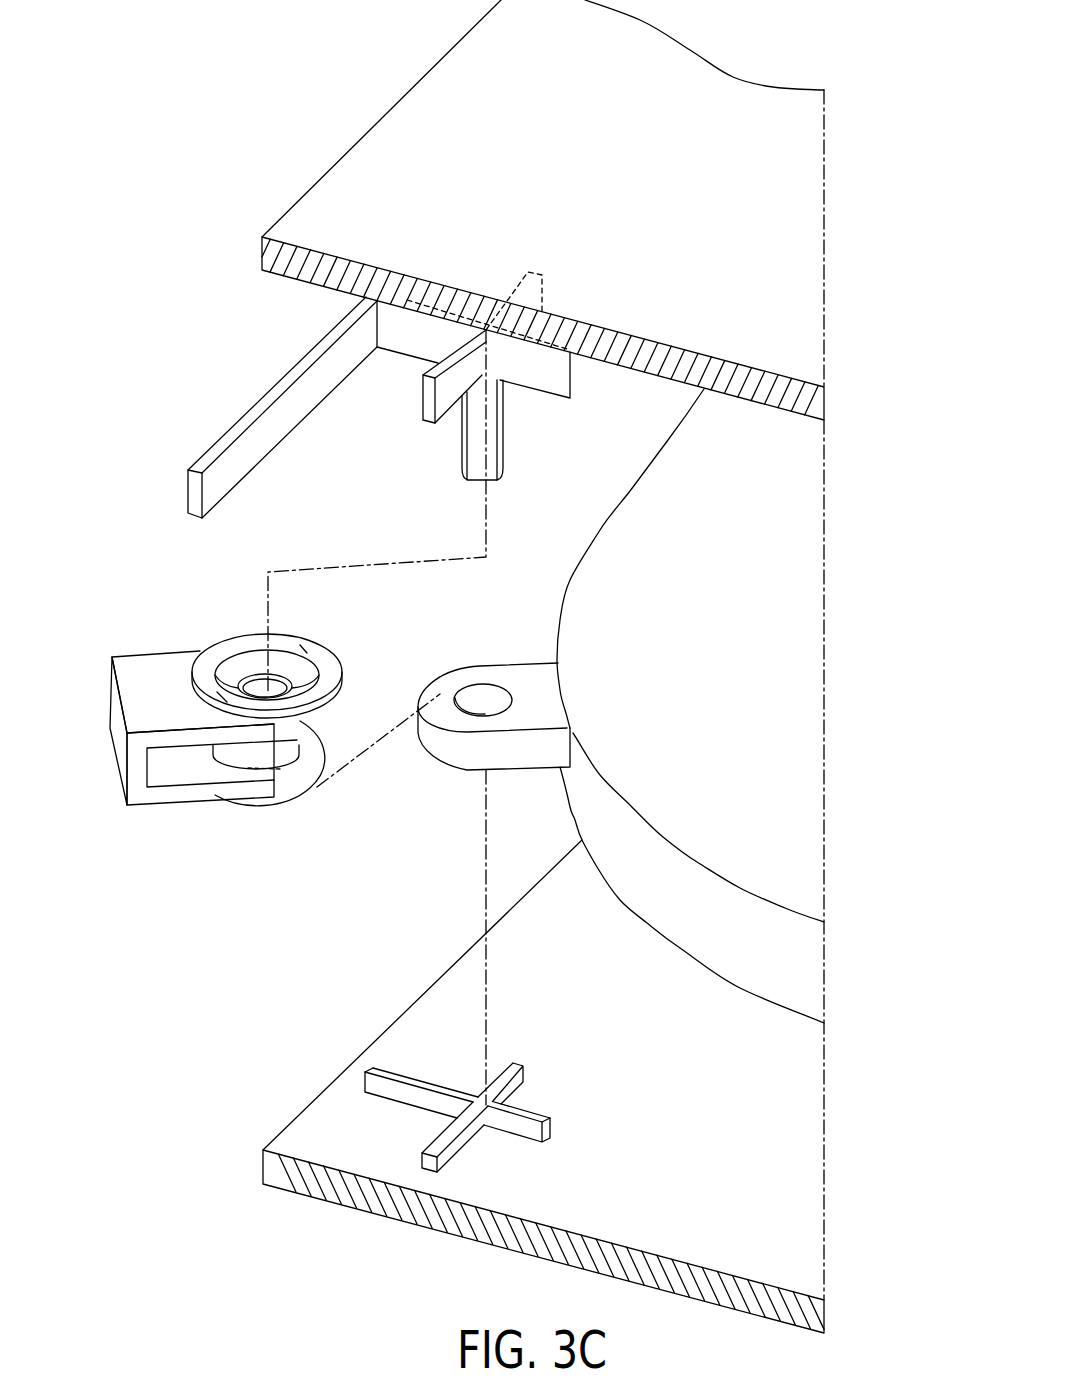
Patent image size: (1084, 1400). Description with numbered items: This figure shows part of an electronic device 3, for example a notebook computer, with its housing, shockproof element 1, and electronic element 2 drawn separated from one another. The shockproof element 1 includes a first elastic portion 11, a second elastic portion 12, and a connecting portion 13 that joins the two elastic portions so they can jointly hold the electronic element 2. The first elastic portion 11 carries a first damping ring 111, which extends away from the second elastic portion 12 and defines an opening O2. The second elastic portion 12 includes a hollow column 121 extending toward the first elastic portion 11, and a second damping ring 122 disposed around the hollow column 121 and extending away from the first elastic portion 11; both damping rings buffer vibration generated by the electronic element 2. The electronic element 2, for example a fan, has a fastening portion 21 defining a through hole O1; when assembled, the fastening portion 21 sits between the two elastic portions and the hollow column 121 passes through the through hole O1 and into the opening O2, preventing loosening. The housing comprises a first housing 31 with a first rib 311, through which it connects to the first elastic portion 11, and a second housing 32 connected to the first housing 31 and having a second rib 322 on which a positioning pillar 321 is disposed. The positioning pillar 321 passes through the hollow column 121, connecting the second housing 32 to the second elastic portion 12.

The shockproof element 1 is at (163, 615).
The first elastic portion 11 is at (173, 793).
The first damping ring 111 is at (293, 798).
The second elastic portion 12 is at (152, 675).
The hollow column 121 is at (253, 753).
The second damping ring 122 is at (242, 643).
The connecting portion 13 is at (117, 725).
The electronic element 2 is at (628, 562).
The fastening portion 21 is at (522, 682).
The electronic device 3 is at (458, 58).
The first housing 31 is at (275, 1171).
The first rib 311 is at (533, 1118).
The second housing 32 is at (288, 262).
The positioning pillar 321 is at (490, 442).
The second rib 322 is at (553, 372).
The through hole O1 is at (485, 695).
The opening O2 is at (313, 742).